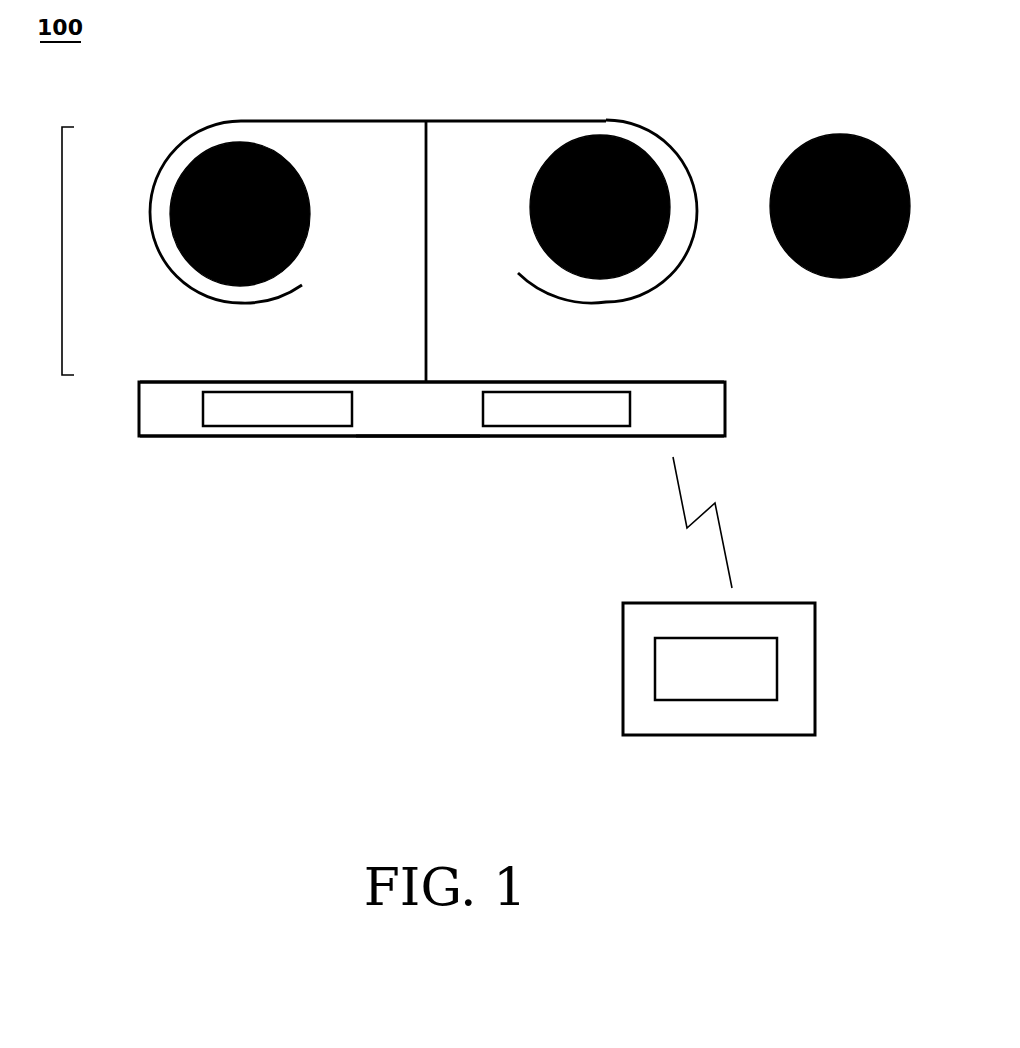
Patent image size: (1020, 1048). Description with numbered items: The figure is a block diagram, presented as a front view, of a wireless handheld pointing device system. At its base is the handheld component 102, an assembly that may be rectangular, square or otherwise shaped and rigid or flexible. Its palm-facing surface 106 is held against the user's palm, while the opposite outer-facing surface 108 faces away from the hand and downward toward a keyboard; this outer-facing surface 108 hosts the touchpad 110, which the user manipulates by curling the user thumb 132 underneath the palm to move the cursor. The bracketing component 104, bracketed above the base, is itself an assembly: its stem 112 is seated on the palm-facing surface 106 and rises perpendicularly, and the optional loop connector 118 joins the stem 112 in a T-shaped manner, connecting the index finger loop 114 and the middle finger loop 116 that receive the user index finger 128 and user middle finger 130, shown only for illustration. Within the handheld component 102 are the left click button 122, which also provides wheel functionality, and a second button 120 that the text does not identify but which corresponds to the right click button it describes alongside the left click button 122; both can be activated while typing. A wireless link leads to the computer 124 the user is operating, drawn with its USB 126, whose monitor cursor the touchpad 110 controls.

The handheld component 102 is at (139, 418).
The bracketing component 104 is at (62, 245).
The palm-facing surface 106 is at (192, 381).
The outer-facing surface 108 is at (470, 436).
The touchpad 110 is at (362, 425).
The stem 112 is at (427, 318).
The index finger loop 114 is at (662, 277).
The middle finger loop 116 is at (152, 243).
The loop connector 118 is at (423, 89).
The second sensor 120 is at (562, 409).
The left click button 122 is at (265, 417).
The computer 124 is at (623, 700).
The USB 126 is at (777, 667).
The user index finger 128 is at (302, 180).
The user middle finger 130 is at (541, 165).
The user thumb 132 is at (797, 150).